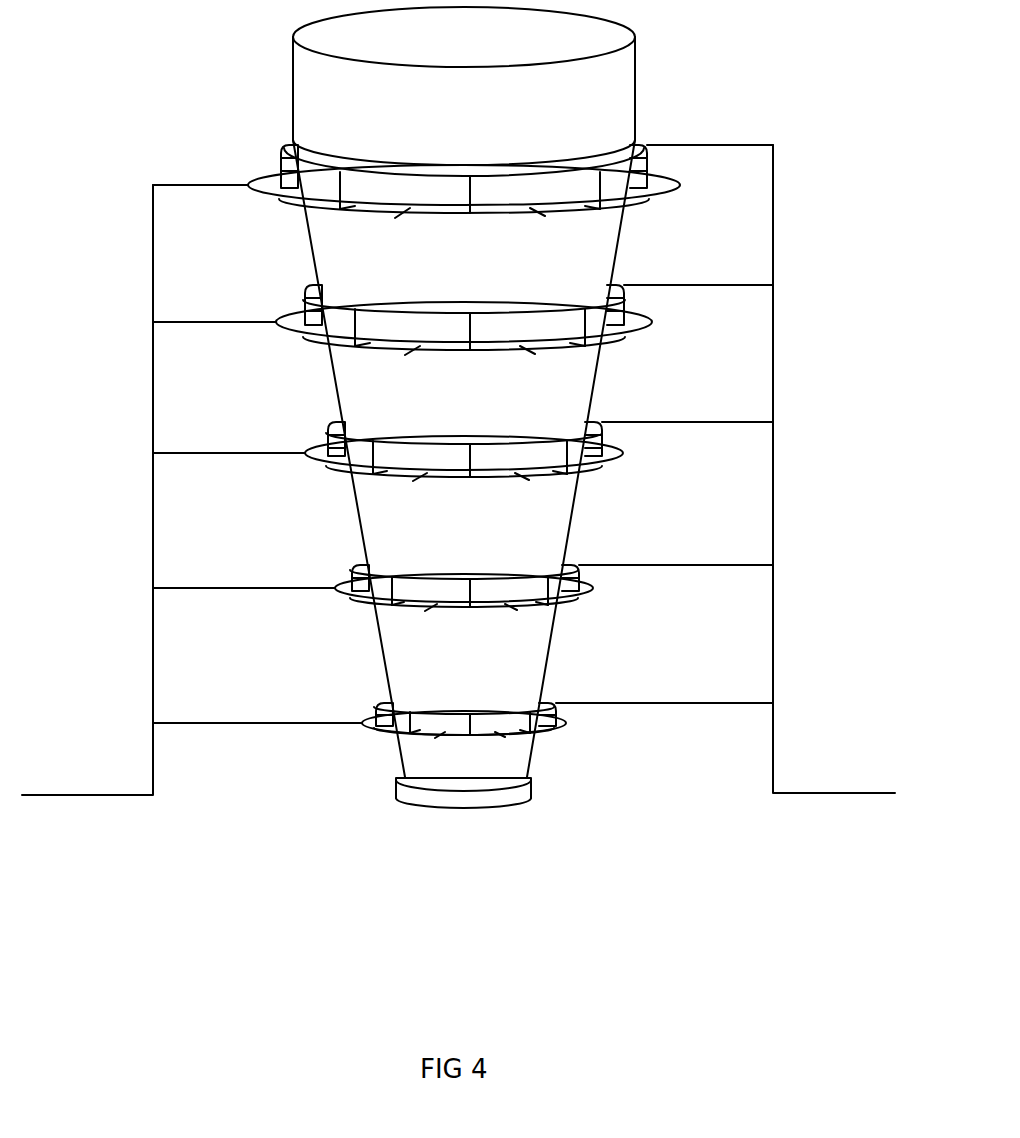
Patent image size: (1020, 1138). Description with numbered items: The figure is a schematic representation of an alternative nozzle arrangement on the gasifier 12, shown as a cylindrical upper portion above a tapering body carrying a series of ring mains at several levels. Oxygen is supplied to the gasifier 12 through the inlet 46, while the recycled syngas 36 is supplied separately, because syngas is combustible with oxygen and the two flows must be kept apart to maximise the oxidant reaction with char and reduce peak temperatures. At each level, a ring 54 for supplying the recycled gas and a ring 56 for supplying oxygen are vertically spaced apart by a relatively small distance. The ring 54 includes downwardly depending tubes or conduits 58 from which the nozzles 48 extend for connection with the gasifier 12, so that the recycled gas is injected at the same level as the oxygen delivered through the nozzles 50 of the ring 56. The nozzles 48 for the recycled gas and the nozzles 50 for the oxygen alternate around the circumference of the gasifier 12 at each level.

The gasifier 12 is at (636, 62).
The recycled syngas 36 is at (800, 787).
The inlet 46 is at (120, 797).
The nozzles 48 is at (306, 332).
The nozzles 50 is at (641, 200).
The ring 54 is at (360, 560).
The ring 56 is at (558, 605).
The downwardly depending tubes or conduits 58 is at (278, 158).